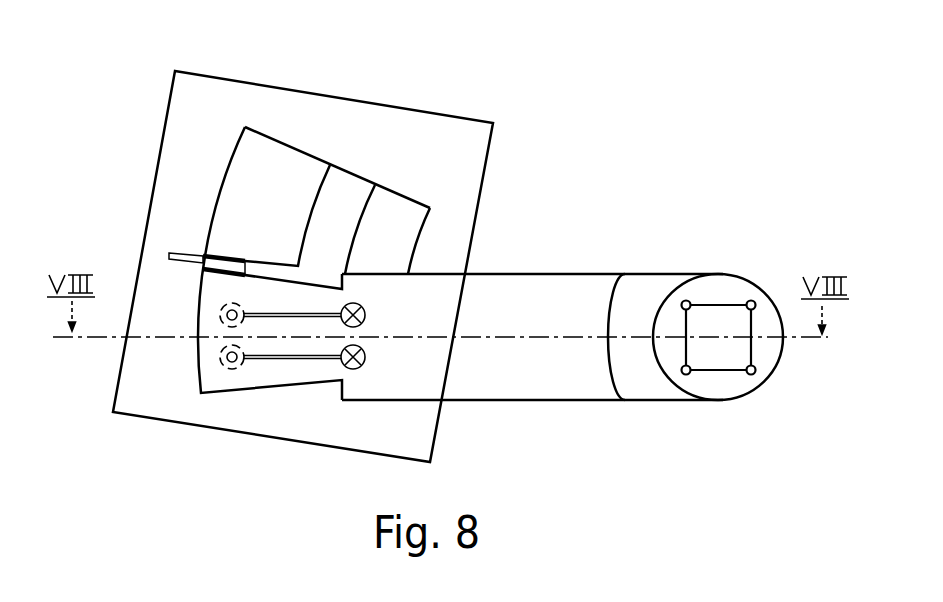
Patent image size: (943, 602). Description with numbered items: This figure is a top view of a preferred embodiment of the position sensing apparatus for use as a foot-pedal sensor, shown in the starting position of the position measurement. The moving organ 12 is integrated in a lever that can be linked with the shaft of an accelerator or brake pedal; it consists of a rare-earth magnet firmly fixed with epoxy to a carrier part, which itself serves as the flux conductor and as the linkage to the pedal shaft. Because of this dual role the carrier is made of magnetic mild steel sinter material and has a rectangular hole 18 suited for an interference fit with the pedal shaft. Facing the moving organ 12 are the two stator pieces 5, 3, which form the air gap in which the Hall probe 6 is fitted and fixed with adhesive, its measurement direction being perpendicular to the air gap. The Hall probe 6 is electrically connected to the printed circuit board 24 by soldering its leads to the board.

The stator piece 3 is at (413, 222).
The stator piece 5 is at (300, 165).
The Hall probe 6 is at (203, 252).
The moving organ 12 is at (592, 298).
The rectangular hole 18 is at (725, 303).
The printed circuit board 24 is at (453, 143).